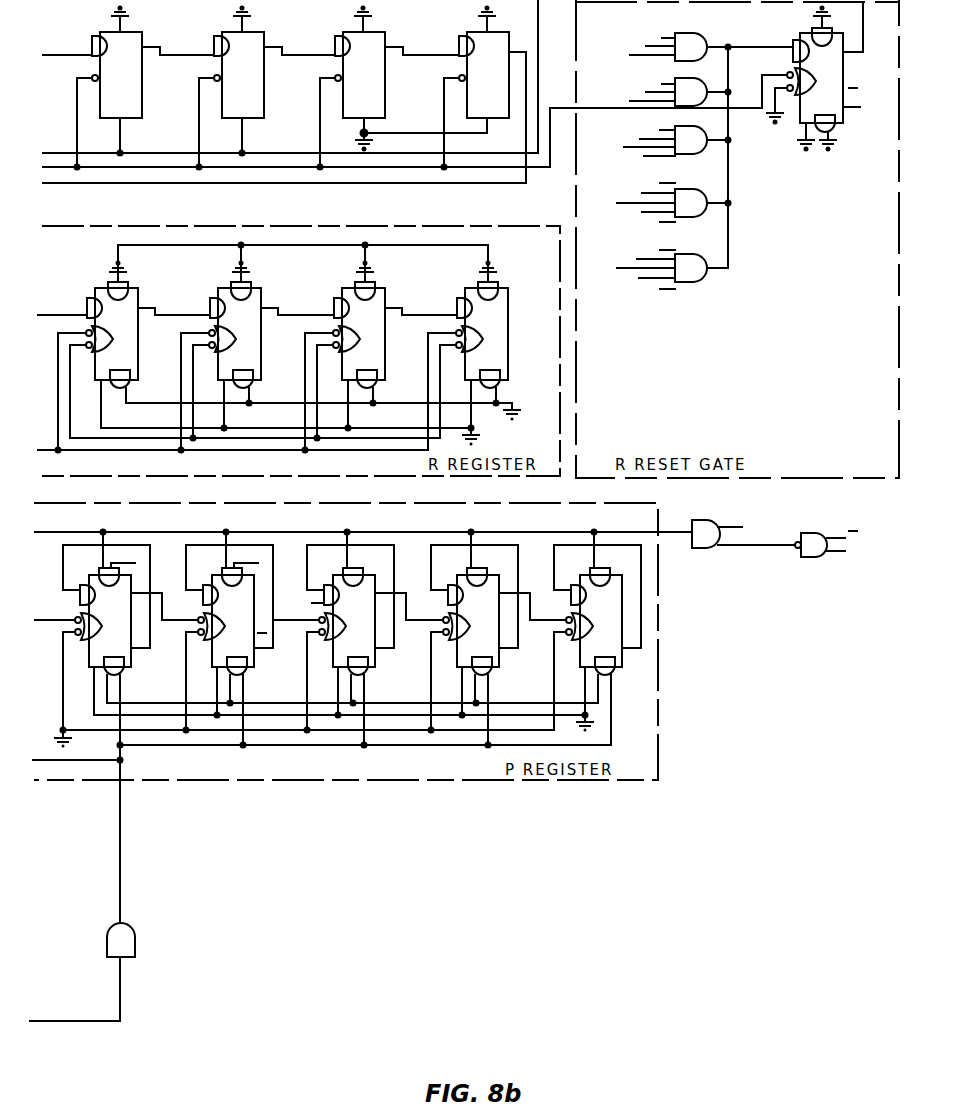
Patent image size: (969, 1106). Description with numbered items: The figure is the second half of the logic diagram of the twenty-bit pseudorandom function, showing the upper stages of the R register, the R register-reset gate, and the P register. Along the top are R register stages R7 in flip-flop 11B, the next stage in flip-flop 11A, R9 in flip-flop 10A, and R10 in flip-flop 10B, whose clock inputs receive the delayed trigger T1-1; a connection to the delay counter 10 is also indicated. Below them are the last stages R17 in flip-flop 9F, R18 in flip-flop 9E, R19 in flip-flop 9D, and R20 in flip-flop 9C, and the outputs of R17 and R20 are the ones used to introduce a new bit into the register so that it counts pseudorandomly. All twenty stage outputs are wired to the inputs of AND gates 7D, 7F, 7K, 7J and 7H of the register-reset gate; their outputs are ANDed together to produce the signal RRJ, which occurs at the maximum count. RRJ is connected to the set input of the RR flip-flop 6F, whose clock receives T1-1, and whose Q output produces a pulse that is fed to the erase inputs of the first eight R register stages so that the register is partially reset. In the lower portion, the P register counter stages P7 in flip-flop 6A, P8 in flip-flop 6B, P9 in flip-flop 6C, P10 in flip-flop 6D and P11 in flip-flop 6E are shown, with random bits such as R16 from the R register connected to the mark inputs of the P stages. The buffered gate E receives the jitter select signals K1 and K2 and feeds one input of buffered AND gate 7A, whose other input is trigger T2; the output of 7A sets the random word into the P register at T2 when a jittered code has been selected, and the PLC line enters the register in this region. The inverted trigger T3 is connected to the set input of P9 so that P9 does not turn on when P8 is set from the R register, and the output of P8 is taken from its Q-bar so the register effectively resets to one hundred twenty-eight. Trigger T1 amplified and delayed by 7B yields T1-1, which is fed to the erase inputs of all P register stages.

The R register stage R7 is at (128, 87).
The flip-flop 11B is at (128, 87).
The flip-flop 11A is at (267, 87).
The R register stage R9 is at (403, 87).
The flip-flop 10A is at (403, 87).
The delay counter 10 is at (329, 70).
The R register stage R10 is at (485, 95).
The flip-flop 10B is at (485, 95).
The R register stage R17 is at (134, 347).
The flip-flop 9F is at (134, 347).
The R register stage R18 is at (257, 347).
The flip-flop 9E is at (257, 347).
The R register stage R19 is at (381, 347).
The flip-flop 9D is at (381, 347).
The R register stage R20 is at (468, 347).
The flip-flop 9C is at (468, 347).
The AND gate 7D is at (702, 46).
The AND gate 7F is at (670, 92).
The AND gate 7K is at (665, 142).
The AND gate 7J is at (661, 202).
The AND gate 7H is at (661, 268).
The R register reset signal RRJ is at (745, 35).
The R register reset flip-flop RR is at (815, 76).
The flip-flop 6F is at (815, 76).
The P register stage P7 is at (130, 638).
The flip-flop 6A is at (130, 638).
The R register stage R16 is at (126, 555).
The P register stage P8 is at (252, 638).
The flip-flop 6B is at (252, 638).
The P register stage P9 is at (369, 638).
The flip-flop 6C is at (369, 638).
The trigger T3 is at (309, 603).
The P register stage P10 is at (498, 638).
The flip-flop 6D is at (498, 638).
The P register stage P11 is at (597, 638).
The flip-flop 6E is at (597, 638).
The PLC signal PLC is at (674, 523).
The buffered AND gate 7A is at (743, 534).
The trigger T2 is at (752, 527).
The buffered NAND gate E is at (800, 549).
The jitter select signal K1 is at (856, 537).
The jitter select signal K2 is at (856, 552).
The amplifier-delay 7B is at (131, 931).
The delayed trigger T1-1 is at (141, 912).